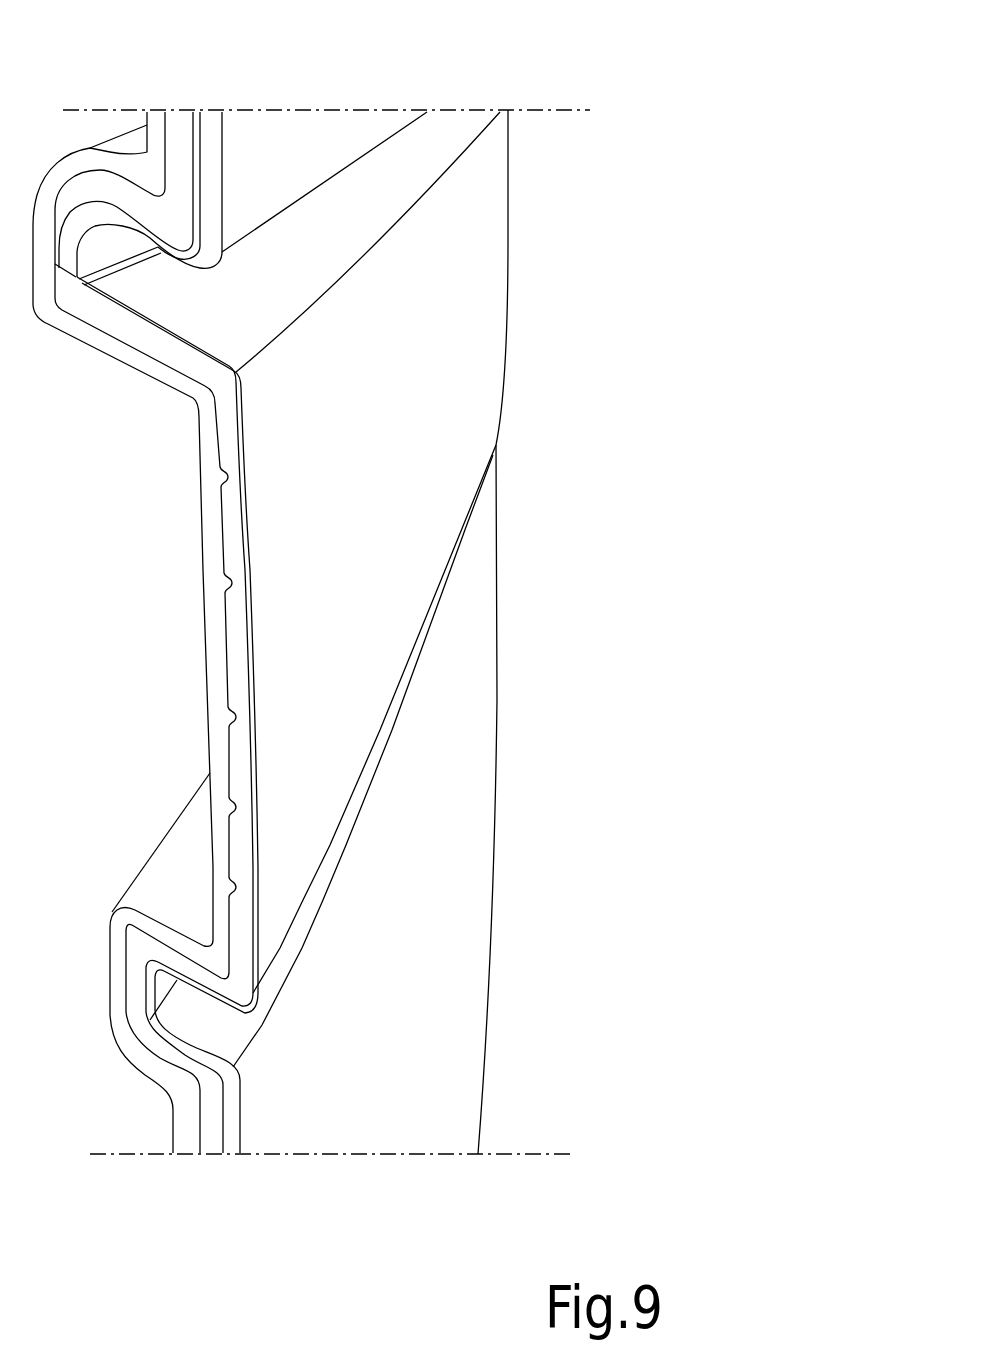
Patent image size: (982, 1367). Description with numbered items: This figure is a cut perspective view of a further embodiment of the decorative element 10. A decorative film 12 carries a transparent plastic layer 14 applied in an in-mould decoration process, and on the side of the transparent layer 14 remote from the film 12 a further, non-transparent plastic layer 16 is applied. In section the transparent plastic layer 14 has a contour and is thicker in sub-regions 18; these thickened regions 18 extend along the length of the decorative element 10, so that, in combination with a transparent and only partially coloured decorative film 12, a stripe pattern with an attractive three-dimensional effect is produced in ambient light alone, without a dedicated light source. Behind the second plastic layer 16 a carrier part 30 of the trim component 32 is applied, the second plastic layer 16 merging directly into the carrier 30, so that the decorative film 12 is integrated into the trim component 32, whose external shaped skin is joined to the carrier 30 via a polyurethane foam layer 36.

The decorative element 10 is at (574, 195).
The film 12 is at (488, 305).
The transparent plastic layer 14 is at (232, 533).
The further plastic layer 16 is at (200, 425).
The sub-region 18 is at (221, 477).
The carrier part 30 is at (155, 122).
The trim component 32 is at (538, 718).
The polyurethane foam layer 36 is at (185, 122).